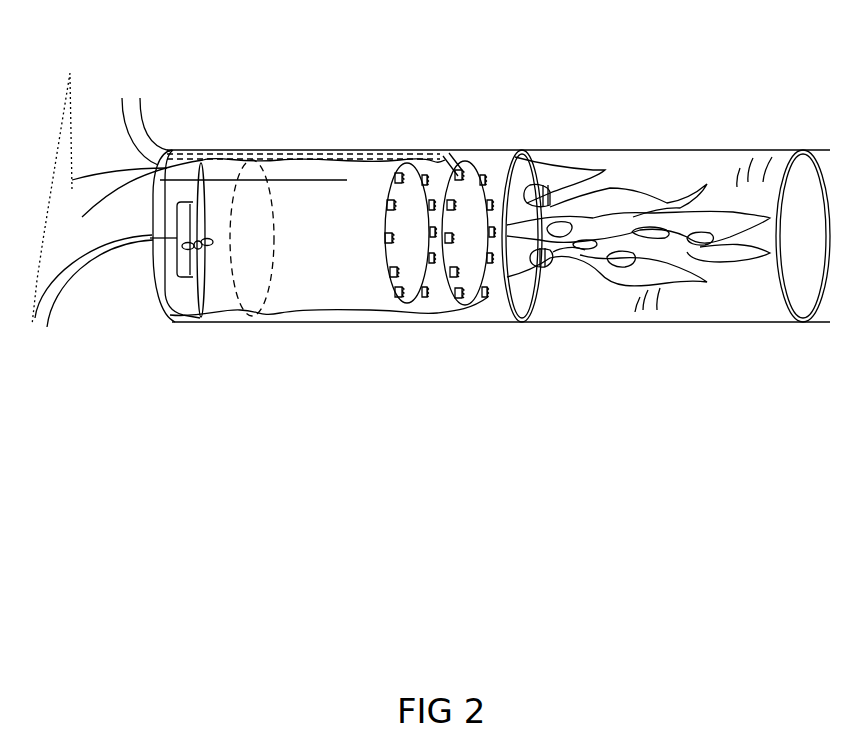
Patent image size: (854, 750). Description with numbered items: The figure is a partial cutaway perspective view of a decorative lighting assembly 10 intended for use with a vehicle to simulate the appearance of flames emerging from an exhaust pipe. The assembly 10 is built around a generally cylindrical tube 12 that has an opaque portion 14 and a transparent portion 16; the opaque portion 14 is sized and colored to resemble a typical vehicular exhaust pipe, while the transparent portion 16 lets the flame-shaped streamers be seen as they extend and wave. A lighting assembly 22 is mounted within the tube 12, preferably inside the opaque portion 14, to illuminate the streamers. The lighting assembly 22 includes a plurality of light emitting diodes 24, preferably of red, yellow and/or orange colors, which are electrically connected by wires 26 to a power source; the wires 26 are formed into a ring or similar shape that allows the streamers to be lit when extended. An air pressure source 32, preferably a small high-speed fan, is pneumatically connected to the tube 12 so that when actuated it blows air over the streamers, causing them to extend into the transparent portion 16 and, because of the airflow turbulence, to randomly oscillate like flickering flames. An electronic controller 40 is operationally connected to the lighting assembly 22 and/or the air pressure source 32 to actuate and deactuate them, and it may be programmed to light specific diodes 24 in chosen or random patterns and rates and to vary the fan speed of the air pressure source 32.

The decorative lighting assembly 10 is at (192, 427).
The cylindrical tube 12 is at (255, 347).
The opaque portion 14 is at (398, 148).
The transparent portion 16 is at (608, 150).
The lighting assembly 22 is at (385, 250).
The light emitting diodes 24 is at (460, 177).
The wires 26 is at (283, 173).
The air pressure source 32 is at (177, 263).
The electronic controller 40 is at (132, 93).